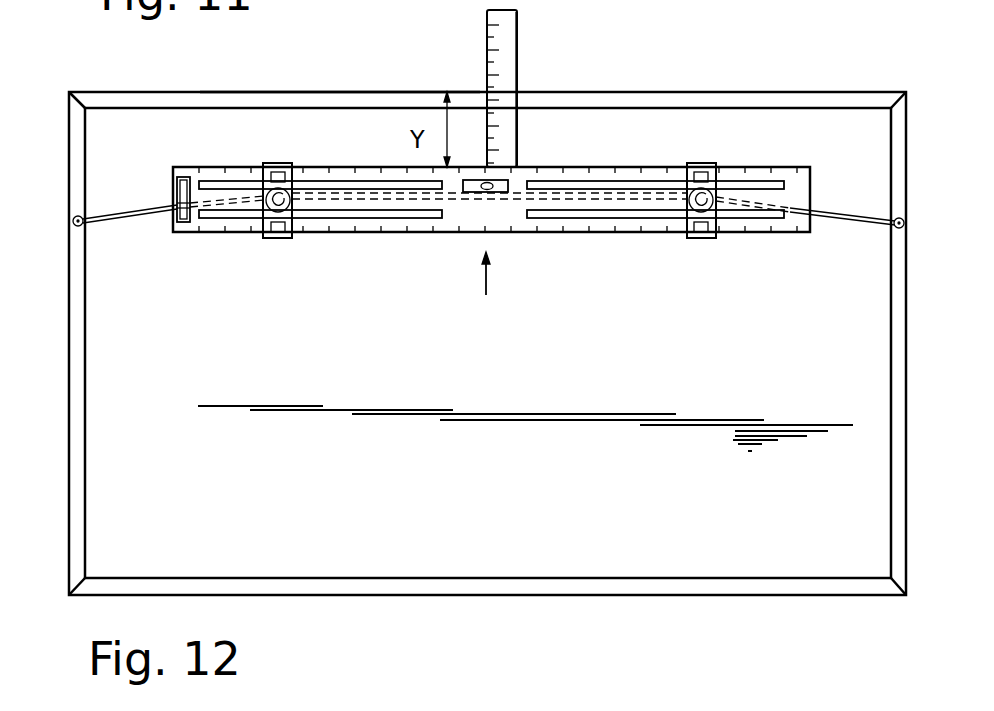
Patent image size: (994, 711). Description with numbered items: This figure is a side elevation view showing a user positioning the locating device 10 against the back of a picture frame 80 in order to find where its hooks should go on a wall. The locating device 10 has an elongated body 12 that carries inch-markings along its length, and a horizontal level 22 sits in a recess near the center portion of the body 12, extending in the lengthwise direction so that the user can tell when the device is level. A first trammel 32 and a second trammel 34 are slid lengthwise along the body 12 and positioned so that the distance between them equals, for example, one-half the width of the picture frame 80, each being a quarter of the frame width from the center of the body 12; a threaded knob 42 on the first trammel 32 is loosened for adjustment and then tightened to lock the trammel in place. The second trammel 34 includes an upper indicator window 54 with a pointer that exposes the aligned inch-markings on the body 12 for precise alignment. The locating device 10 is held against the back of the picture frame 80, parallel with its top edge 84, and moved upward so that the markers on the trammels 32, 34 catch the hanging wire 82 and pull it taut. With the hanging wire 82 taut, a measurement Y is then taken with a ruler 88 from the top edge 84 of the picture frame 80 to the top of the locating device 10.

The locating device 10 is at (171, 250).
The body 12 is at (509, 215).
The horizontal level 22 is at (468, 190).
The first trammel 32 is at (275, 163).
The second trammel 34 is at (711, 163).
The threaded knob 42 is at (262, 240).
The upper indicator window 54 is at (688, 215).
The picture frame 80 is at (827, 125).
The hanging wire 82 is at (843, 214).
The top edge 84 is at (358, 92).
The ruler 88 is at (517, 66).